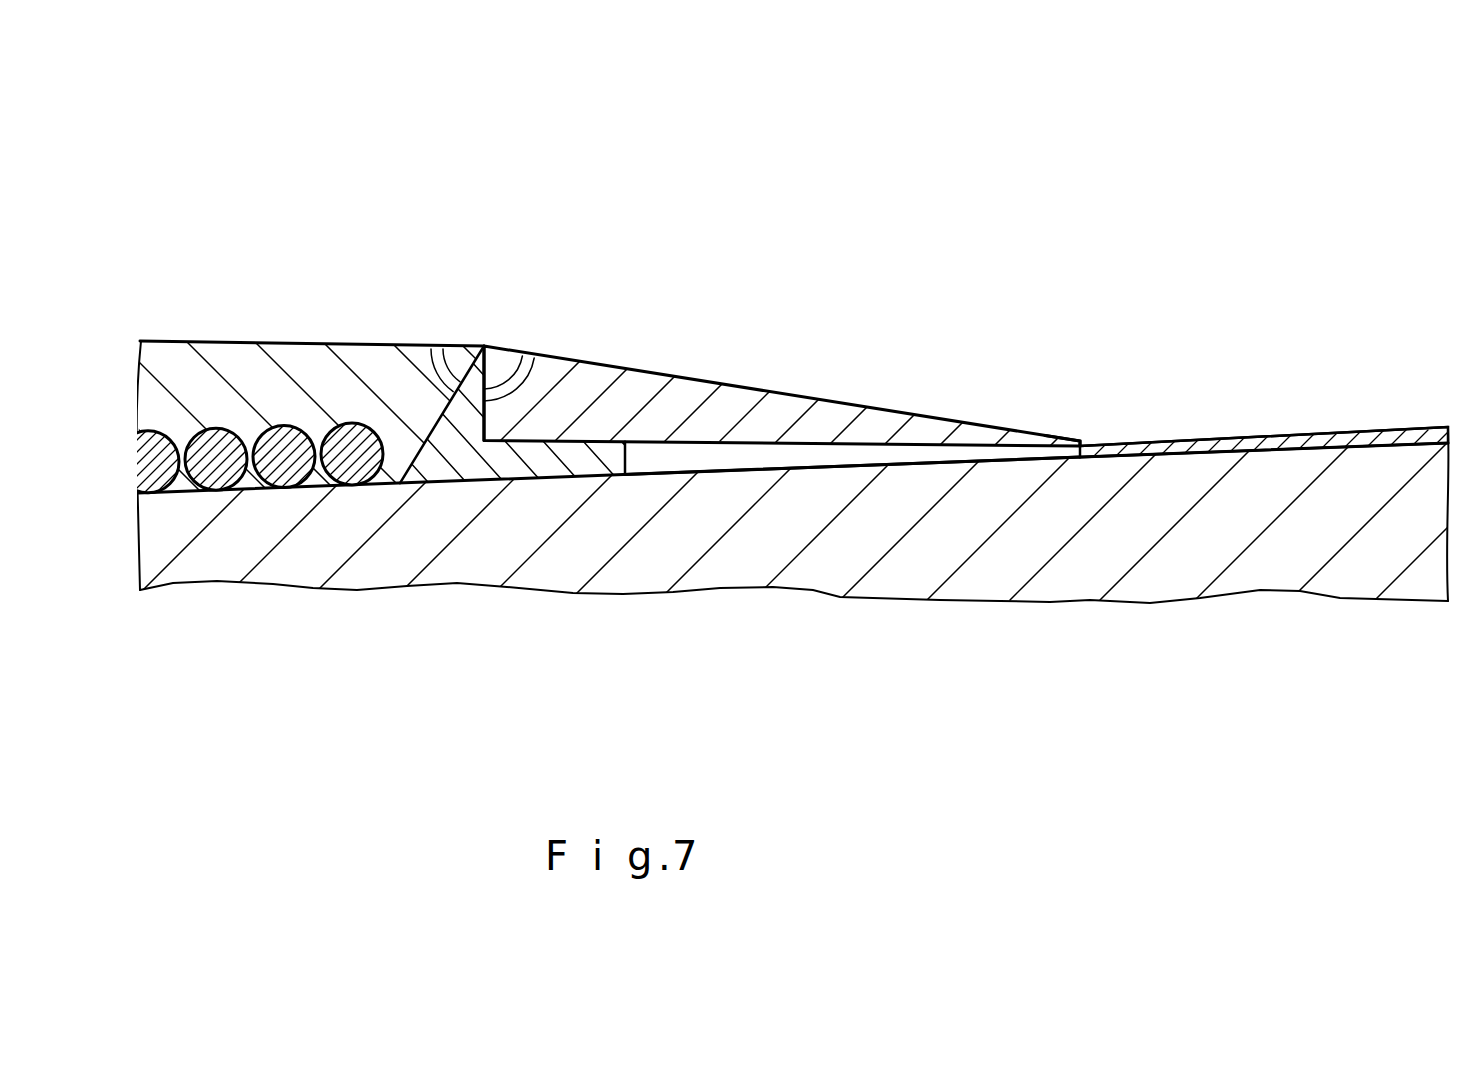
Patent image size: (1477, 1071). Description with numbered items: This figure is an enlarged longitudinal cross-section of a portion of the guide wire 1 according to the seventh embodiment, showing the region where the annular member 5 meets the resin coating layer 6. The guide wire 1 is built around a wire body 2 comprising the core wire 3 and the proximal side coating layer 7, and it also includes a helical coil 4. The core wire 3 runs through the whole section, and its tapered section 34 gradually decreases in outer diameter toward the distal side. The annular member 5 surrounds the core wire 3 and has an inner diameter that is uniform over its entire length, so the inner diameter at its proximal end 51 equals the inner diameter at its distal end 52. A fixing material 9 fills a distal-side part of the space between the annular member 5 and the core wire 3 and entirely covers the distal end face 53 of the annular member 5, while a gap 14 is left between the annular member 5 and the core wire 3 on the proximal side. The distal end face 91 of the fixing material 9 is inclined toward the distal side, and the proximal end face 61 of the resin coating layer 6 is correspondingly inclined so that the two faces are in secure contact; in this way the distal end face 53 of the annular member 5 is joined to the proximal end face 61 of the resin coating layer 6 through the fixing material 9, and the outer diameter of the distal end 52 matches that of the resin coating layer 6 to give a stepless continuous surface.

The guide wire 1 is at (1068, 135).
The wire body 2 is at (1358, 427).
The core wire 3 is at (1298, 548).
The tapered section 34 is at (1177, 553).
The helical coil 4 is at (288, 455).
The annular member 5 is at (735, 412).
The proximal end 51 is at (1083, 440).
The distal end 52 is at (484, 347).
The distal end face 53 is at (445, 395).
The resin coating layer 6 is at (195, 385).
The proximal end face 61 is at (532, 362).
The coating layer 7 is at (1255, 437).
The fixing material 9 is at (457, 460).
The distal end face 91 is at (375, 400).
The gap 14 is at (808, 458).